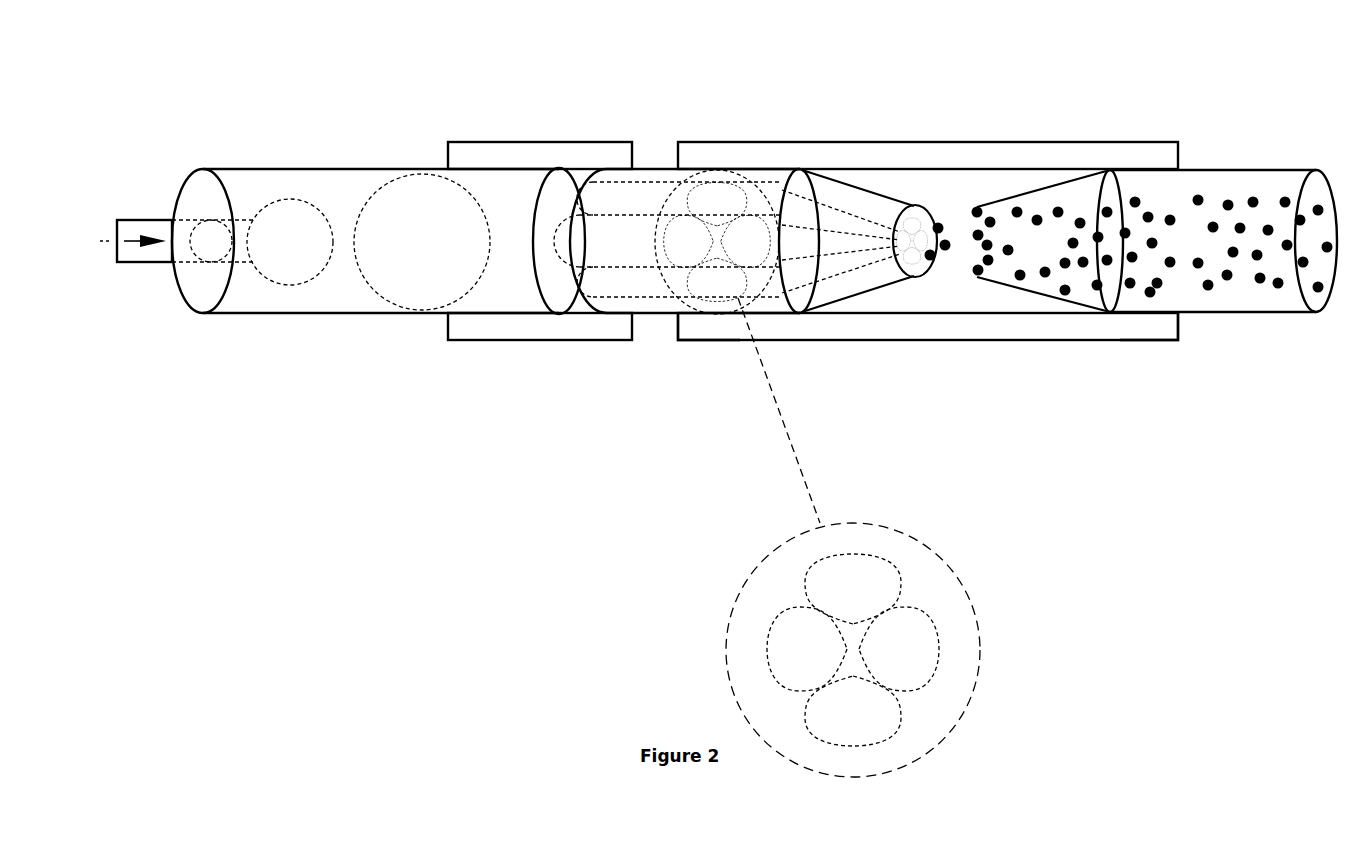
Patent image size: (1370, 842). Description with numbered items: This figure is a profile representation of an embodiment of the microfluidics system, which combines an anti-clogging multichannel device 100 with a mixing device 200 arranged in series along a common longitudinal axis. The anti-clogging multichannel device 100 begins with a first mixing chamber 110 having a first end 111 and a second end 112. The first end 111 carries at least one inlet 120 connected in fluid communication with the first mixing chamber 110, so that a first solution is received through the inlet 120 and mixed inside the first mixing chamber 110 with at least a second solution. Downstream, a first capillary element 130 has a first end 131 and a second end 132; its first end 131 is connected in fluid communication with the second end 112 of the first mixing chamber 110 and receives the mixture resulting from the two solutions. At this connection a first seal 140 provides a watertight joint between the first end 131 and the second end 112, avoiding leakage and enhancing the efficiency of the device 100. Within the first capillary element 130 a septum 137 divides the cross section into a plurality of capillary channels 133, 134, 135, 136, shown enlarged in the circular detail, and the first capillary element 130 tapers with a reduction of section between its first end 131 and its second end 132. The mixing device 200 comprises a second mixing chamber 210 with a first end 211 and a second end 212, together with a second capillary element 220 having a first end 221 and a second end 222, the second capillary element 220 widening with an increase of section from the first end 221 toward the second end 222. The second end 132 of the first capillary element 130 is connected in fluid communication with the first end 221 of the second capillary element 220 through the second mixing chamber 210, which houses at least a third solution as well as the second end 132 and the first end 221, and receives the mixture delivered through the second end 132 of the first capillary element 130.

The anti-clogging multichannel device 100 is at (950, 438).
The first mixing chamber 110 is at (567, 347).
The first end of the first mixing chamber 111 is at (228, 258).
The second end of the first mixing chamber 112 is at (535, 341).
The inlet 120 is at (133, 220).
The first capillary element 130 is at (947, 133).
The first end of the first capillary element 131 is at (643, 168).
The second end of the first capillary element 132 is at (905, 206).
The capillary channel 133 is at (833, 590).
The capillary channel 134 is at (777, 643).
The capillary channel 135 is at (937, 640).
The capillary channel 136 is at (880, 707).
The septum 137 is at (893, 529).
The first seal 140 is at (482, 110).
The mixing device 200 is at (1318, 347).
The second mixing chamber 210 is at (943, 328).
The first end of the second mixing chamber 211 is at (700, 327).
The second end of the second mixing chamber 212 is at (1153, 327).
The second capillary element 220 is at (1318, 133).
The first end of the second capillary element 221 is at (1037, 247).
The second end of the second capillary element 222 is at (1290, 185).